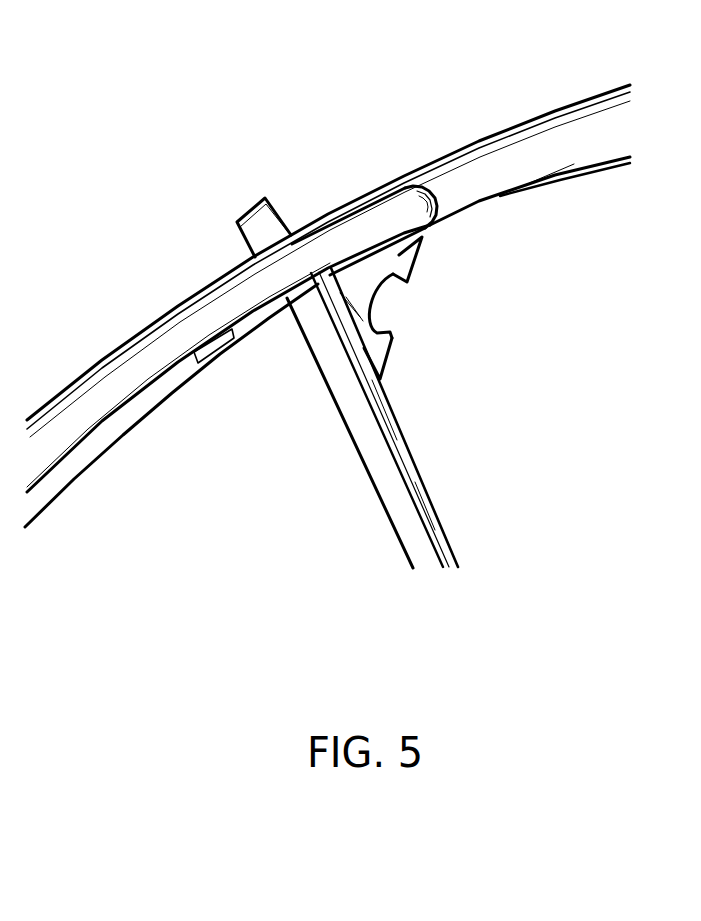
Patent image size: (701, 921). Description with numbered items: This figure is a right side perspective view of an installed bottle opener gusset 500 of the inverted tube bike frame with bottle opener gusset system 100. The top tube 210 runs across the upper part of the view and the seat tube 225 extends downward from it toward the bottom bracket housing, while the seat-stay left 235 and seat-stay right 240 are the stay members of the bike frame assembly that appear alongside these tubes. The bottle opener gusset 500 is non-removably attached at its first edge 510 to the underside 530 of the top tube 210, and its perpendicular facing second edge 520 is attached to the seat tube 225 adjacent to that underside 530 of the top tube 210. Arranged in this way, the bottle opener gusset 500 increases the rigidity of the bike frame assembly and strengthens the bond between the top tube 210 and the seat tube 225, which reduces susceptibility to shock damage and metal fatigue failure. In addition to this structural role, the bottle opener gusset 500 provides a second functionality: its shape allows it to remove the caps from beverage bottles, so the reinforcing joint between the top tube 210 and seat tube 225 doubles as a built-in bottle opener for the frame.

The inverted tube bike frame with bottle opener gusset system 100 is at (152, 50).
The top tube 210 is at (519, 152).
The seat tube 225 is at (400, 470).
The seat-stay left 235 is at (157, 408).
The seat-stay right 240 is at (187, 327).
The bottle opener gusset 500 is at (372, 299).
The first edge 510 is at (403, 270).
The second edge 520 is at (388, 348).
The underside 530 is at (478, 211).